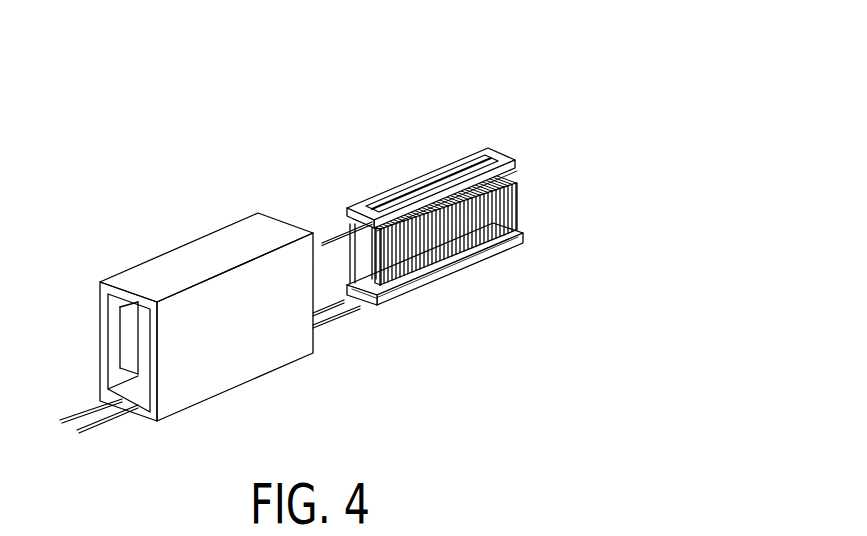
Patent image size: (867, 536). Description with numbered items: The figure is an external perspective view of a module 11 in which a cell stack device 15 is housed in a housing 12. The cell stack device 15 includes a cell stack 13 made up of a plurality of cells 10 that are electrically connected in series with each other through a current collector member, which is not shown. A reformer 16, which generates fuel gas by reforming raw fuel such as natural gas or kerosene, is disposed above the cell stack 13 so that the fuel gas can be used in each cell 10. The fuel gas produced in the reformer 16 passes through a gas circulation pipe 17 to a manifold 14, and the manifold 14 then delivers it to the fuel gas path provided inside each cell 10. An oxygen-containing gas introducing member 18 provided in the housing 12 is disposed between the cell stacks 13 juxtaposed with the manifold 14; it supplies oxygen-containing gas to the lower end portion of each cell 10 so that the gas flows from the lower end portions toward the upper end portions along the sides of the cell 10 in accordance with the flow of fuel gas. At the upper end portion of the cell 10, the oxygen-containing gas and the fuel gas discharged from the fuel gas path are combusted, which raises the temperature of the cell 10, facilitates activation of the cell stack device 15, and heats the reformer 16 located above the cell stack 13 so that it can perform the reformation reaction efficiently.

The cell 10 is at (447, 222).
The module 11 is at (168, 69).
The housing 12 is at (210, 289).
The cell stack 13 is at (385, 292).
The manifold 14 is at (387, 305).
The cell stack device 15 is at (453, 144).
The reformer 16 is at (350, 210).
The gas circulation pipe 17 is at (347, 223).
The oxygen-containing gas introducing member 18 is at (147, 315).